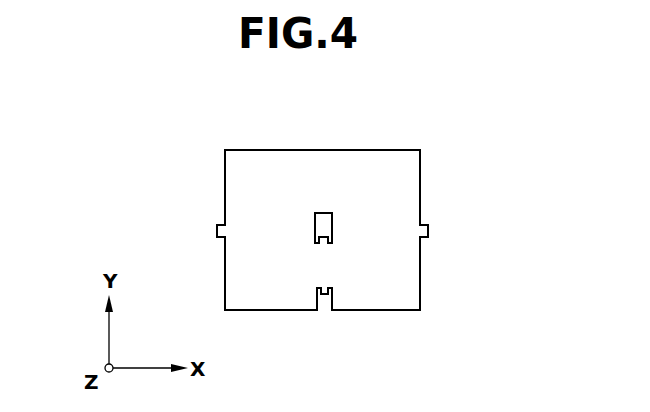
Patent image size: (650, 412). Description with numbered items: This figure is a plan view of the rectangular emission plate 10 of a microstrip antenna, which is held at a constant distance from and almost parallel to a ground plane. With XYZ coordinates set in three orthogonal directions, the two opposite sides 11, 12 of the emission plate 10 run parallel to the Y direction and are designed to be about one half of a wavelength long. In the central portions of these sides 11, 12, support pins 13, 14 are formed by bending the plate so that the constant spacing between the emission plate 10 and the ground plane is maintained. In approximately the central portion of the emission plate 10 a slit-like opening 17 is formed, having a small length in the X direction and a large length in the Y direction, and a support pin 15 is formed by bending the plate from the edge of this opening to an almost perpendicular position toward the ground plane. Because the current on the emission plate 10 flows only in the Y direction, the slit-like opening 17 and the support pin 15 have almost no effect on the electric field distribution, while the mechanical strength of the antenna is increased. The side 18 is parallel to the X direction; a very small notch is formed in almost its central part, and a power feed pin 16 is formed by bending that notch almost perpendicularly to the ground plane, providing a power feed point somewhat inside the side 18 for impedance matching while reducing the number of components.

The emission plate 10 is at (326, 221).
The side 11 is at (422, 187).
The side 12 is at (225, 183).
The support pin 13 is at (428, 231).
The support pin 14 is at (217, 231).
The support pin 15 is at (321, 237).
The power feed pin 16 is at (323, 310).
The slit-like opening 17 is at (321, 213).
The side 18 is at (271, 310).